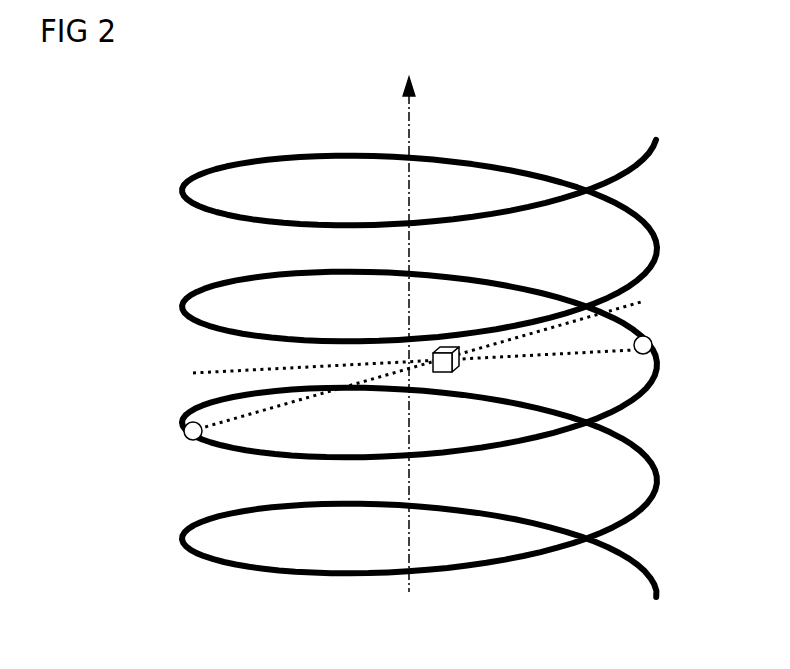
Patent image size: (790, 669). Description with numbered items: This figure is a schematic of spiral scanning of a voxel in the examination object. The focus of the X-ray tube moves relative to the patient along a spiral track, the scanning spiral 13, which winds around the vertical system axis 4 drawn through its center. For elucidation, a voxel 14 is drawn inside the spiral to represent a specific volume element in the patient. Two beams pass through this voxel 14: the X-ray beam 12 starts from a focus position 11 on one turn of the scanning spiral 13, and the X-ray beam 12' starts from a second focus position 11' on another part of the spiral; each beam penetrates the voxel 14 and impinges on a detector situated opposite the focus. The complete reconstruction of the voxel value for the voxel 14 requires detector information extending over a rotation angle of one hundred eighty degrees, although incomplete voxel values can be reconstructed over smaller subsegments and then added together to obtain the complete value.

The scanning spiral 13 is at (258, 161).
The system axis 4 is at (409, 112).
The X-ray beam through a voxel from the second focus position 12' is at (391, 355).
The X-ray beam through a voxel 12 is at (419, 373).
The focus position 11 is at (174, 463).
The second focus position 11' is at (680, 331).
The voxel 14 is at (453, 372).